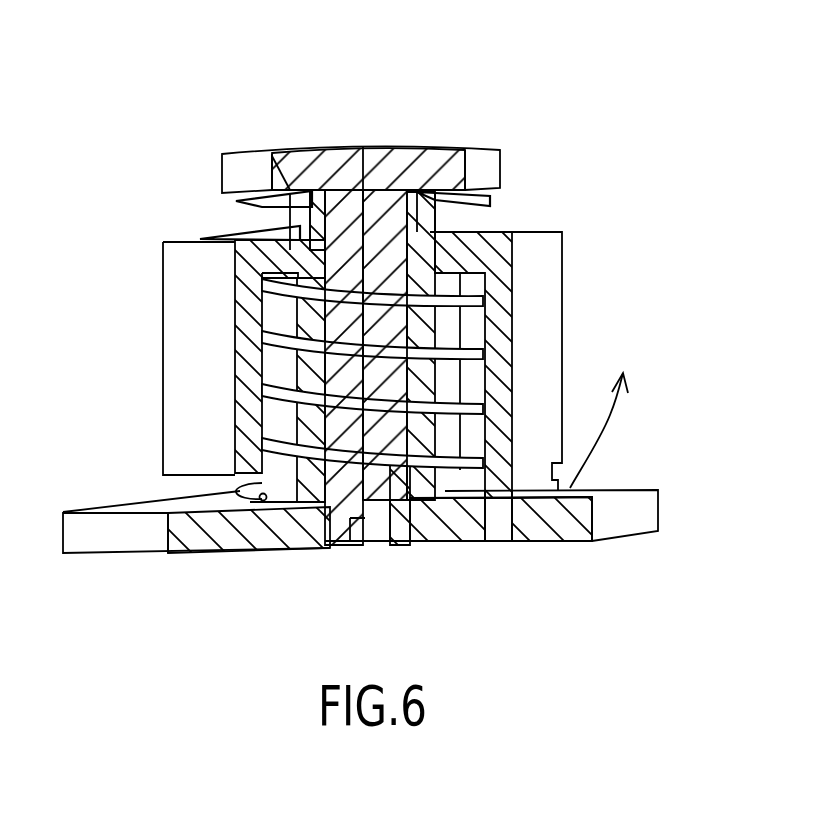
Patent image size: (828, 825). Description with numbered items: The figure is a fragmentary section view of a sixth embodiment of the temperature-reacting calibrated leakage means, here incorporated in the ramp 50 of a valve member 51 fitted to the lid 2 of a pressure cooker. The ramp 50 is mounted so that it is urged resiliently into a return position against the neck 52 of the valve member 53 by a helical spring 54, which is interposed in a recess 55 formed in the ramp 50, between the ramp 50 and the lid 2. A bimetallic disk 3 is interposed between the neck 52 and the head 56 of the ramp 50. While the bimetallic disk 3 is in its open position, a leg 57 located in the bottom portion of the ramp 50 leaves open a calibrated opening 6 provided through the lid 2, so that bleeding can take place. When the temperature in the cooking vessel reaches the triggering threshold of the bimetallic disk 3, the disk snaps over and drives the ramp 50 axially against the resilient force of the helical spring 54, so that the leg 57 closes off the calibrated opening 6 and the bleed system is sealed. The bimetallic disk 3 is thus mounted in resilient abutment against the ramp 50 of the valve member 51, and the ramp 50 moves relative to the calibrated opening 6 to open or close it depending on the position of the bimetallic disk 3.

The lid 2 is at (598, 494).
The bimetallic disk 3 is at (457, 197).
The calibrated opening 6 is at (510, 450).
The ramp 50 is at (192, 319).
The valve member 51 is at (472, 138).
The neck 52 is at (232, 198).
The valve member 53 is at (290, 165).
The helical spring 54 is at (473, 405).
The recess 55 is at (275, 373).
The head 56 is at (298, 220).
The leg 57 is at (507, 457).